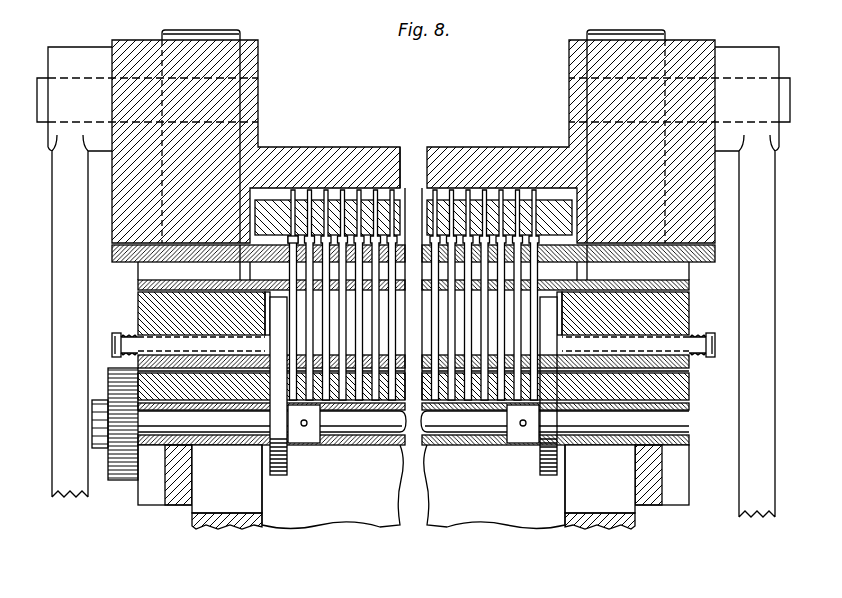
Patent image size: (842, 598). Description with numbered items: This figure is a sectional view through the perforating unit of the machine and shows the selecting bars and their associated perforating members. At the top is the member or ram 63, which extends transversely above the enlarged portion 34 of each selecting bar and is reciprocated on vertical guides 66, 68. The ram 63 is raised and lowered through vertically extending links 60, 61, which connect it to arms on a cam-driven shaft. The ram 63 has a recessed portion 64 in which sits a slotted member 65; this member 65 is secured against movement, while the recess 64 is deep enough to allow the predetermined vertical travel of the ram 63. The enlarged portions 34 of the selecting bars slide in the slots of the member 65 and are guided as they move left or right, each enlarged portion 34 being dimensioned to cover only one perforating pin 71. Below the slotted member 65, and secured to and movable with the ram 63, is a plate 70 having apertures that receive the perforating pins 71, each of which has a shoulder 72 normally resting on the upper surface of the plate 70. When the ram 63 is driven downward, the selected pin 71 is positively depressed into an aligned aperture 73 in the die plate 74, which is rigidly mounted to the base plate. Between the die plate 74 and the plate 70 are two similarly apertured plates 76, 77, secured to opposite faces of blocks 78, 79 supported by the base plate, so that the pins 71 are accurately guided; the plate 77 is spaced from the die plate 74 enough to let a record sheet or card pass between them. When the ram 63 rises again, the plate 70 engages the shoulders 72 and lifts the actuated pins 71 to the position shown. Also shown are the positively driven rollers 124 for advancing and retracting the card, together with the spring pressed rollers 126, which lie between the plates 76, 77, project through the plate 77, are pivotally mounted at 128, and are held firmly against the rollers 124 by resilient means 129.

The enlarged portion 34 is at (403, 168).
The vertically extending link 60 is at (761, 282).
The vertically extending link 61 is at (80, 301).
The member or ram 63 is at (126, 177).
The recessed portion 64 is at (499, 180).
The slotted member 65 is at (600, 220).
The vertical guide 66 is at (637, 21).
The vertical guide 68 is at (216, 30).
The plate 70 is at (132, 230).
The perforating pins 71 is at (290, 236).
The shoulder 72 is at (264, 236).
The apertures 73 is at (449, 329).
The die plate 74 is at (482, 329).
The apertured plate 76 is at (150, 289).
The apertured plate 77 is at (137, 359).
The block 78 is at (165, 308).
The block 79 is at (664, 321).
The rollers 124 is at (288, 468).
The spring pressed rollers 126 is at (255, 300).
The pivot 128 is at (113, 348).
The resilient means 129 is at (123, 337).